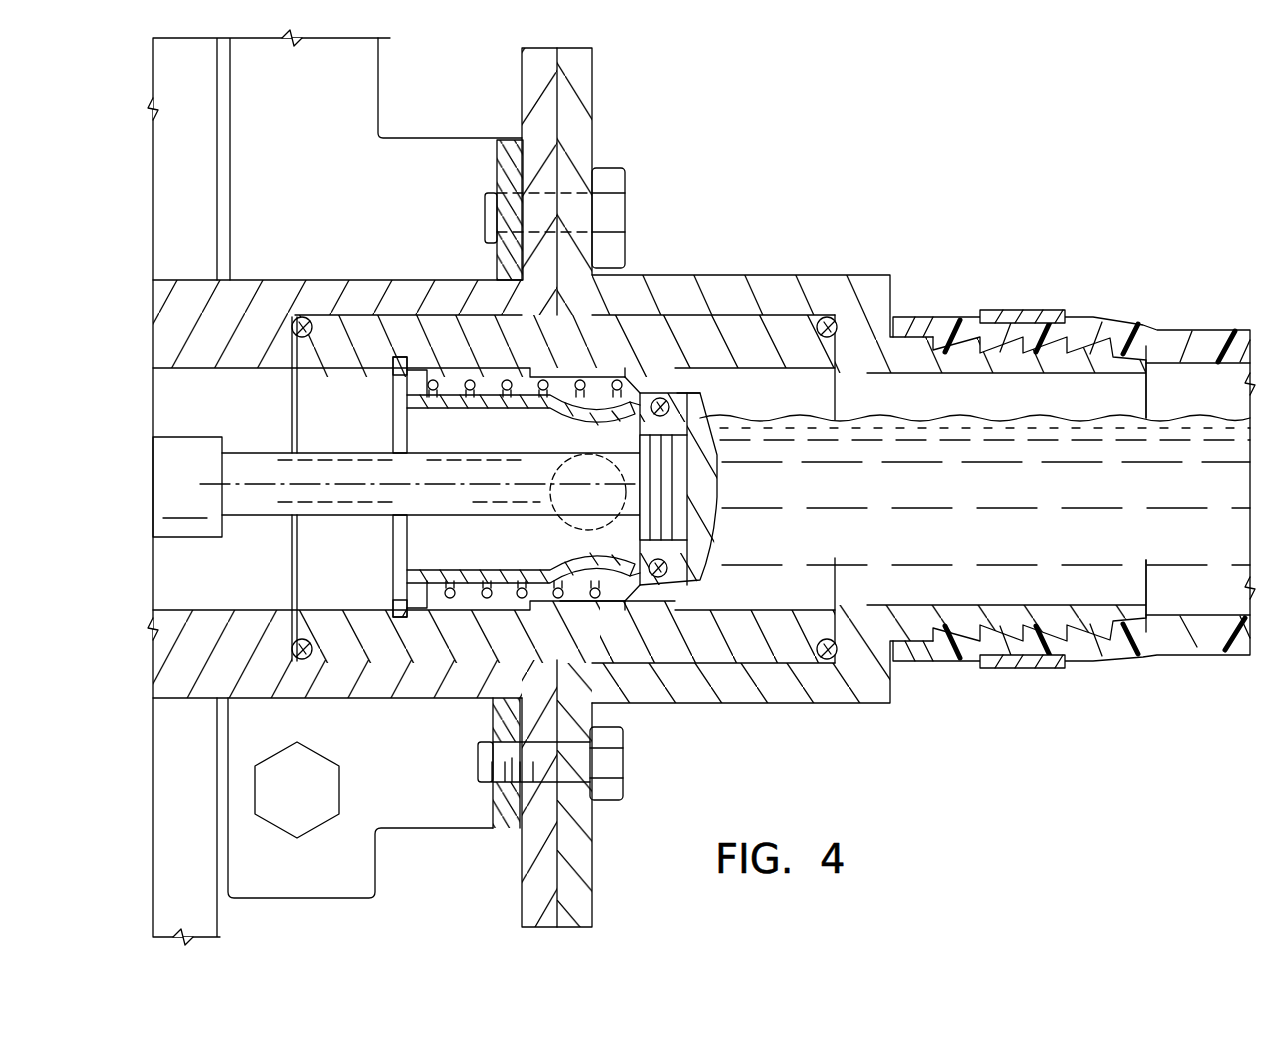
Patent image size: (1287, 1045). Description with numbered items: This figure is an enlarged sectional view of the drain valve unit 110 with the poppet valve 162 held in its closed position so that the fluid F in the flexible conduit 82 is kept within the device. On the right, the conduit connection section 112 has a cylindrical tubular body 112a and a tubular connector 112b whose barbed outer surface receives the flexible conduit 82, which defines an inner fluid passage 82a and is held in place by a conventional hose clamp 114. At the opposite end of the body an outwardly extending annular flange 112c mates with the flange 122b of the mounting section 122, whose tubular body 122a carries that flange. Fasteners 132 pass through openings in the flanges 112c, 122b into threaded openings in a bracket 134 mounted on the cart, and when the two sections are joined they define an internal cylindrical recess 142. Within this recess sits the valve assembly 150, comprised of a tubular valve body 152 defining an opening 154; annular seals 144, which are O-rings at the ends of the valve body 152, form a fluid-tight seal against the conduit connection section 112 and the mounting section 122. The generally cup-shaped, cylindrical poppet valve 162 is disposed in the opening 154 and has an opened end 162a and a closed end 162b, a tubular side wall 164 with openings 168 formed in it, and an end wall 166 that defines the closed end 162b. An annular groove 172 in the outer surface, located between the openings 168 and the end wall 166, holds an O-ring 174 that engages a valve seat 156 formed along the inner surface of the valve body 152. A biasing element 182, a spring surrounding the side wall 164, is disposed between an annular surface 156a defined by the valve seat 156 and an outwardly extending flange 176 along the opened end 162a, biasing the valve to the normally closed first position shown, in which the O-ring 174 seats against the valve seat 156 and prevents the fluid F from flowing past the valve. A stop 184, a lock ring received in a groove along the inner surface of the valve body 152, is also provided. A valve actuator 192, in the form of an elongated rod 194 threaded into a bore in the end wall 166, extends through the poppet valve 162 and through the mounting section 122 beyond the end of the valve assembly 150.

The flexible conduit 82 is at (1071, 442).
The inner fluid passage 82a is at (1193, 393).
The valve assembly (drain valve unit) 110 is at (851, 487).
The conduit connection section 112 is at (851, 487).
The tubular body 112a is at (750, 293).
The tubular connector 112b is at (1075, 360).
The annular flange 112c is at (583, 90).
The hose clamp 114 is at (1030, 310).
The mounting section 122 is at (389, 442).
The tubular body 122a is at (368, 292).
The flange 122b is at (528, 92).
The fasteners 132 is at (608, 177).
The bracket 134 is at (415, 165).
The internal cylindrical recess 142 is at (672, 325).
The annular seals 144 is at (307, 663).
The valve assembly 150 is at (718, 325).
The valve body 152 is at (720, 643).
The opening 154 is at (770, 370).
The valve seat 156 is at (601, 393).
The annular surface 156a is at (650, 398).
The poppet valve 162 is at (675, 480).
The opened end 162a is at (417, 549).
The closed end 162b is at (713, 475).
The tubular side wall 164 is at (473, 575).
The end wall 166 is at (703, 510).
The openings 168 is at (570, 413).
The annular groove 172 is at (676, 408).
The O-ring 174 is at (662, 580).
The outwardly extending flange 176 is at (428, 370).
The biasing element (spring) 182 is at (470, 380).
The stop 184 is at (400, 380).
The valve actuator 192 is at (401, 491).
The elongated rod 194 is at (263, 508).
The fluid F is at (932, 450).